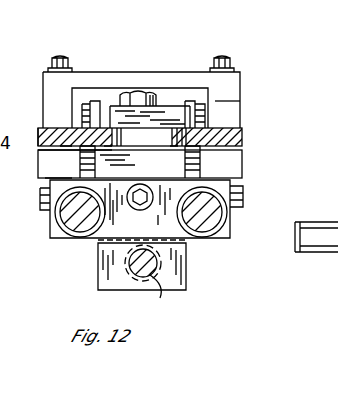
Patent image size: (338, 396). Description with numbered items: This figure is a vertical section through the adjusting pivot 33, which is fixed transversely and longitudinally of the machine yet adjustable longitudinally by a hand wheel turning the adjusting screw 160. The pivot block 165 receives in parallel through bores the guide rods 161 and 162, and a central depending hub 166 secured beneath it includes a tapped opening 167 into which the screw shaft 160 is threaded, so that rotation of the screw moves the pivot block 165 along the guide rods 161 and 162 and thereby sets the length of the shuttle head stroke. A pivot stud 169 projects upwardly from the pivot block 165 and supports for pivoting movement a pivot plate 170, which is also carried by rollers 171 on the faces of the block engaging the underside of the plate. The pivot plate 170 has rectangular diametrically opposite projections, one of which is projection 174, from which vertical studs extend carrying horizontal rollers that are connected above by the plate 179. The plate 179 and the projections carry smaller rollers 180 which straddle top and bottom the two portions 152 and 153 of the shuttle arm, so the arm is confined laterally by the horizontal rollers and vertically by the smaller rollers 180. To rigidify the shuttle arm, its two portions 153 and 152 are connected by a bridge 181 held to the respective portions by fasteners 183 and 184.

The adjusting pivot 33 is at (246, 78).
The portion of the shuttle arm 152 is at (246, 133).
The portion of the shuttle arm 153 is at (42, 134).
The adjusting screw 160 is at (150, 263).
The guide rod 161 is at (62, 240).
The guide rod 162 is at (205, 215).
The pivot block 165 is at (230, 238).
The depending hub 166 is at (115, 280).
The tapped opening 167 is at (167, 295).
The pivot stud 169 is at (144, 92).
The pivot plate 170 is at (245, 162).
The roller 171 is at (244, 198).
The projection 174 is at (135, 180).
The plate 179 is at (172, 112).
The smaller roller 180 is at (98, 106).
The bridge 181 is at (237, 118).
The fastener 183 is at (63, 58).
The fastener 184 is at (224, 58).